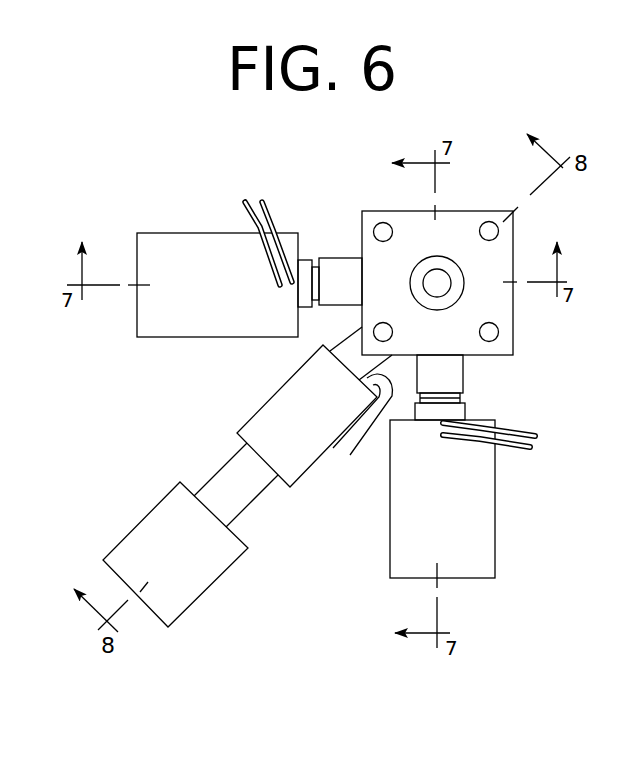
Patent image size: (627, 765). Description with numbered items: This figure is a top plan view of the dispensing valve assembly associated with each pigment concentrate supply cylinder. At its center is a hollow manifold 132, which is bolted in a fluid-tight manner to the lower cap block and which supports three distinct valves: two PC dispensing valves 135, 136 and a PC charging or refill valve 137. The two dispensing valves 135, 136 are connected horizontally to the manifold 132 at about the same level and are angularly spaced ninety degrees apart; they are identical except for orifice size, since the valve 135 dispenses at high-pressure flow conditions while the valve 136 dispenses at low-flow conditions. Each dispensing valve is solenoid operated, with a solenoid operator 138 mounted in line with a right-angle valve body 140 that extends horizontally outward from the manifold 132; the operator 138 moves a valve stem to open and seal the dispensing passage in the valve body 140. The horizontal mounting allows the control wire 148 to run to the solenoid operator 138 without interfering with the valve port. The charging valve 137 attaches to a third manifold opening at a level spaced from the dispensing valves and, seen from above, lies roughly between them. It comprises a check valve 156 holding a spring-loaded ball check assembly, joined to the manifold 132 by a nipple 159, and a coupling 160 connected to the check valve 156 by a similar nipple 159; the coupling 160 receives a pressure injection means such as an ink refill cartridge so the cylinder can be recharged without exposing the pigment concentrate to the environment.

The manifold 132 is at (503, 314).
The dispensing valve 135 is at (206, 228).
The dispensing valve 136 is at (528, 465).
The charging valve 137 is at (184, 564).
The solenoid operator 138 is at (163, 327).
The valve body 140 is at (333, 258).
The control wire 148 is at (525, 452).
The check valve 156 is at (262, 399).
The nipple 159 is at (253, 502).
The coupling 160 is at (148, 515).